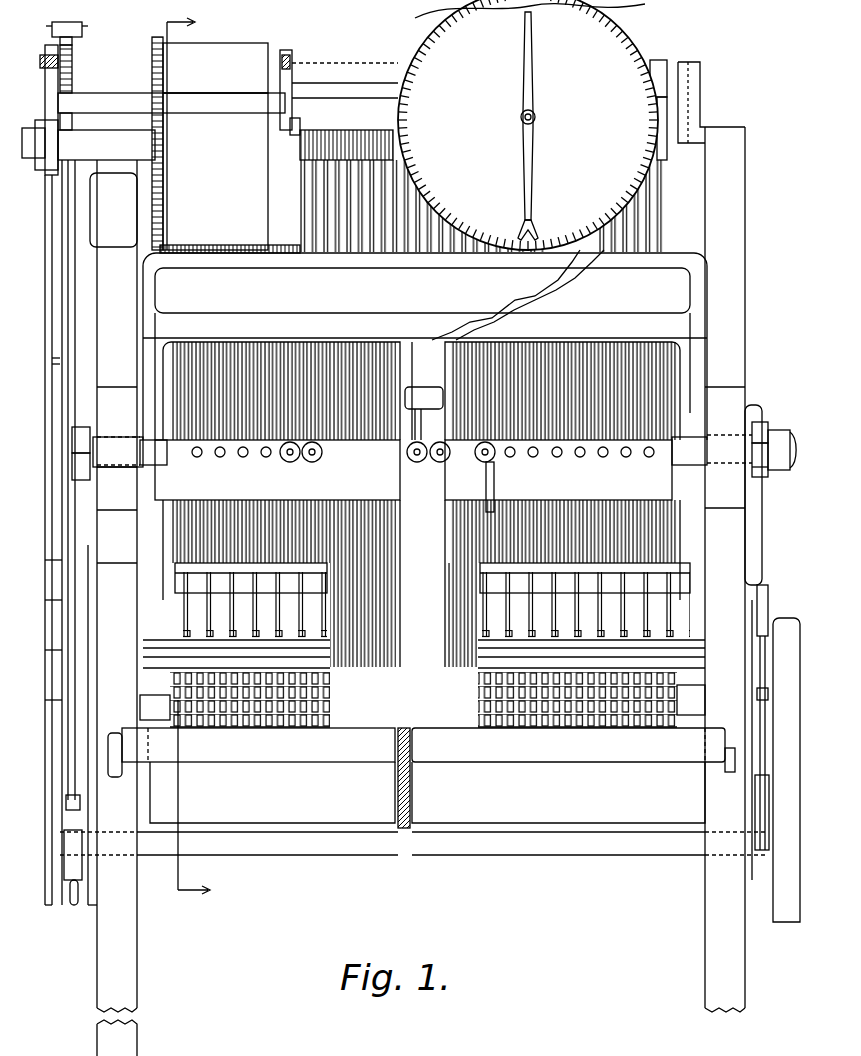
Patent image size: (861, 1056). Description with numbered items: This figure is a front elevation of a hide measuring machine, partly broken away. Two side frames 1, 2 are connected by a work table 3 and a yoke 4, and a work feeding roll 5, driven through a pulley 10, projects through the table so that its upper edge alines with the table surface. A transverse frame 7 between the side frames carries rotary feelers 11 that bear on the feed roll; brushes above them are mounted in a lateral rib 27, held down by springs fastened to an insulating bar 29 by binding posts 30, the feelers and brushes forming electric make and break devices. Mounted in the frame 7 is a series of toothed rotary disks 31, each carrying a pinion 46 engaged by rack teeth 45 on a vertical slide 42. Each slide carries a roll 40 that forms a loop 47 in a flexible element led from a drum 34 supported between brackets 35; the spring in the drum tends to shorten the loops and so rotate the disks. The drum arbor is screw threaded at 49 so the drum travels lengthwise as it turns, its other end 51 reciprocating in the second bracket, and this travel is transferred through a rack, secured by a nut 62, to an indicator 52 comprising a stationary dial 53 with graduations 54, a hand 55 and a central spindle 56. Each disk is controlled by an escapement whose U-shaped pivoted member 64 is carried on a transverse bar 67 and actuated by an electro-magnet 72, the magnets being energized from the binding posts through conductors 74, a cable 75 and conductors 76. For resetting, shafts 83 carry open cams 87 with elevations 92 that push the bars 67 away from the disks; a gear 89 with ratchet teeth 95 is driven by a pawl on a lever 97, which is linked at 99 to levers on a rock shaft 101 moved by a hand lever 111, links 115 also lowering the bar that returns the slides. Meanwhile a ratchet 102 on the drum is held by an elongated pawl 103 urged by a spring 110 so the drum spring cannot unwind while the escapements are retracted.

The side frame 1 is at (722, 268).
The side frame 2 is at (115, 218).
The work table 3 is at (600, 778).
The yoke 4 is at (690, 118).
The work feeding roll 5 is at (432, 736).
The transverse frame 7 is at (240, 292).
The pulley 10 is at (786, 916).
The work engaging member or feeler 11 is at (316, 720).
The lateral rib 27 is at (162, 656).
The insulating bar 29 is at (156, 644).
The binding post 30 is at (170, 634).
The rotary disk 31 is at (348, 332).
The drum 34 is at (238, 60).
The bracket 35 is at (52, 92).
The roll 40 is at (432, 255).
The slide 42 is at (668, 346).
The teeth 45 is at (380, 504).
The pinion 46 is at (312, 458).
The loop 47 is at (642, 206).
The screw thread 49 is at (356, 142).
The arbor end 51 is at (115, 160).
The indicator 52 is at (656, 95).
The dial 53 is at (528, 133).
The graduations 54 is at (422, 178).
The hand 55 is at (531, 32).
The spindle 56 is at (520, 117).
The nut 62 is at (31, 158).
The pivoted member 64 is at (494, 488).
The bar 67 is at (146, 506).
The electro-magnet 72 is at (288, 460).
The conductor 74 is at (302, 622).
The cable 75 is at (412, 415).
The conductor 76 is at (422, 430).
The shaft 83 is at (160, 458).
The cam 87 is at (84, 478).
The gear 89 is at (50, 284).
The elevation 92 is at (80, 455).
The ratchet teeth 95 is at (52, 360).
The lever 97 is at (66, 388).
The link 99 is at (68, 752).
The shaft 101 is at (336, 852).
The ratchet 102 is at (163, 196).
The pawl 103 is at (224, 106).
The spring 110 is at (72, 68).
The hand lever 111 is at (65, 896).
The link 115 is at (762, 672).